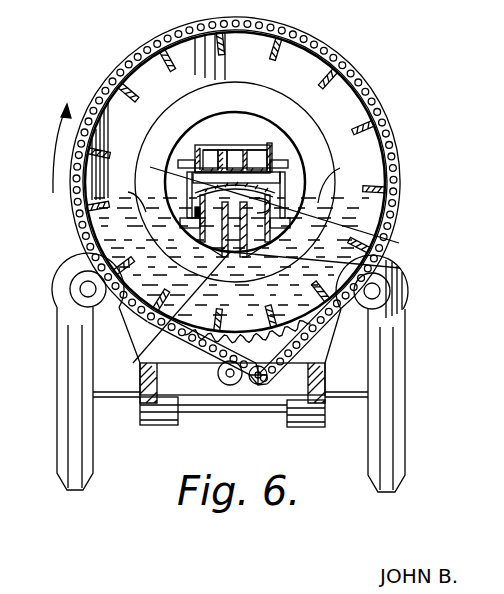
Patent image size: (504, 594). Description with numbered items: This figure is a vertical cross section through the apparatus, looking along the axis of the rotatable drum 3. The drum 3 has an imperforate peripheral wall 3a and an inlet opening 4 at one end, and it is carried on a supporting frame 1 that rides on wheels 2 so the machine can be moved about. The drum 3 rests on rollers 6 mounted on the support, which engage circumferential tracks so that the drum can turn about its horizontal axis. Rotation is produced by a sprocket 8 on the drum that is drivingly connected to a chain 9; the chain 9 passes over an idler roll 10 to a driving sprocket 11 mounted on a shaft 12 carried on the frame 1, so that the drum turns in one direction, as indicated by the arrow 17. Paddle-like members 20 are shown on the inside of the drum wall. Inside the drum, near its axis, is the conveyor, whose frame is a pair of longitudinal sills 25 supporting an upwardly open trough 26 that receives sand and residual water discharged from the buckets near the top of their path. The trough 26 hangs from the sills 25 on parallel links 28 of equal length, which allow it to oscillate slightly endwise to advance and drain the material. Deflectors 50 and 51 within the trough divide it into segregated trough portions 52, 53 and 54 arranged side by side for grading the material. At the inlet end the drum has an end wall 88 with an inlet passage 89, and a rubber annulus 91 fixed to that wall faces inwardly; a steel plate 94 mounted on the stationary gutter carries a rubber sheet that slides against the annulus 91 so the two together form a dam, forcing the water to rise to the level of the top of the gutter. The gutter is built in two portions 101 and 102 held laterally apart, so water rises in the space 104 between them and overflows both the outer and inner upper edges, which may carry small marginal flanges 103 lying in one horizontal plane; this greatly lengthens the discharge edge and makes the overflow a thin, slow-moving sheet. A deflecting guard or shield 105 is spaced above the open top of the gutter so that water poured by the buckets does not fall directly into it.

The supporting frame 1 is at (155, 425).
The wheels 2 is at (54, 408).
The rotatable drum 3 is at (352, 72).
The imperforate peripheral wall 3a is at (392, 149).
The inlet opening 4 is at (221, 112).
The rollers 6 is at (72, 290).
The sprocket 8 is at (290, 358).
The chain 9 is at (394, 214).
The idler roll 10 is at (230, 387).
The driving sprocket 11 is at (266, 384).
The shaft 12 is at (257, 386).
The arrow 17 is at (52, 162).
The paddle blade 20 is at (135, 98).
The longitudinal sills 25 is at (181, 228).
The trough 26 is at (272, 157).
The links 28 is at (187, 186).
The deflector 50 is at (207, 148).
The deflector 51 is at (234, 148).
The trough portion 52 is at (196, 153).
The trough portion 53 is at (258, 147).
The trough portion 54 is at (262, 164).
The end wall 88 is at (235, 182).
The inlet passage 89 is at (222, 127).
The rubber annulus 91 is at (157, 129).
The steel plate 94 is at (231, 232).
The gutter portion 101 is at (400, 268).
The gutter portion 102 is at (230, 308).
The marginal flanges 103 is at (165, 170).
The space 104 is at (166, 315).
The deflecting guard 105 is at (400, 242).